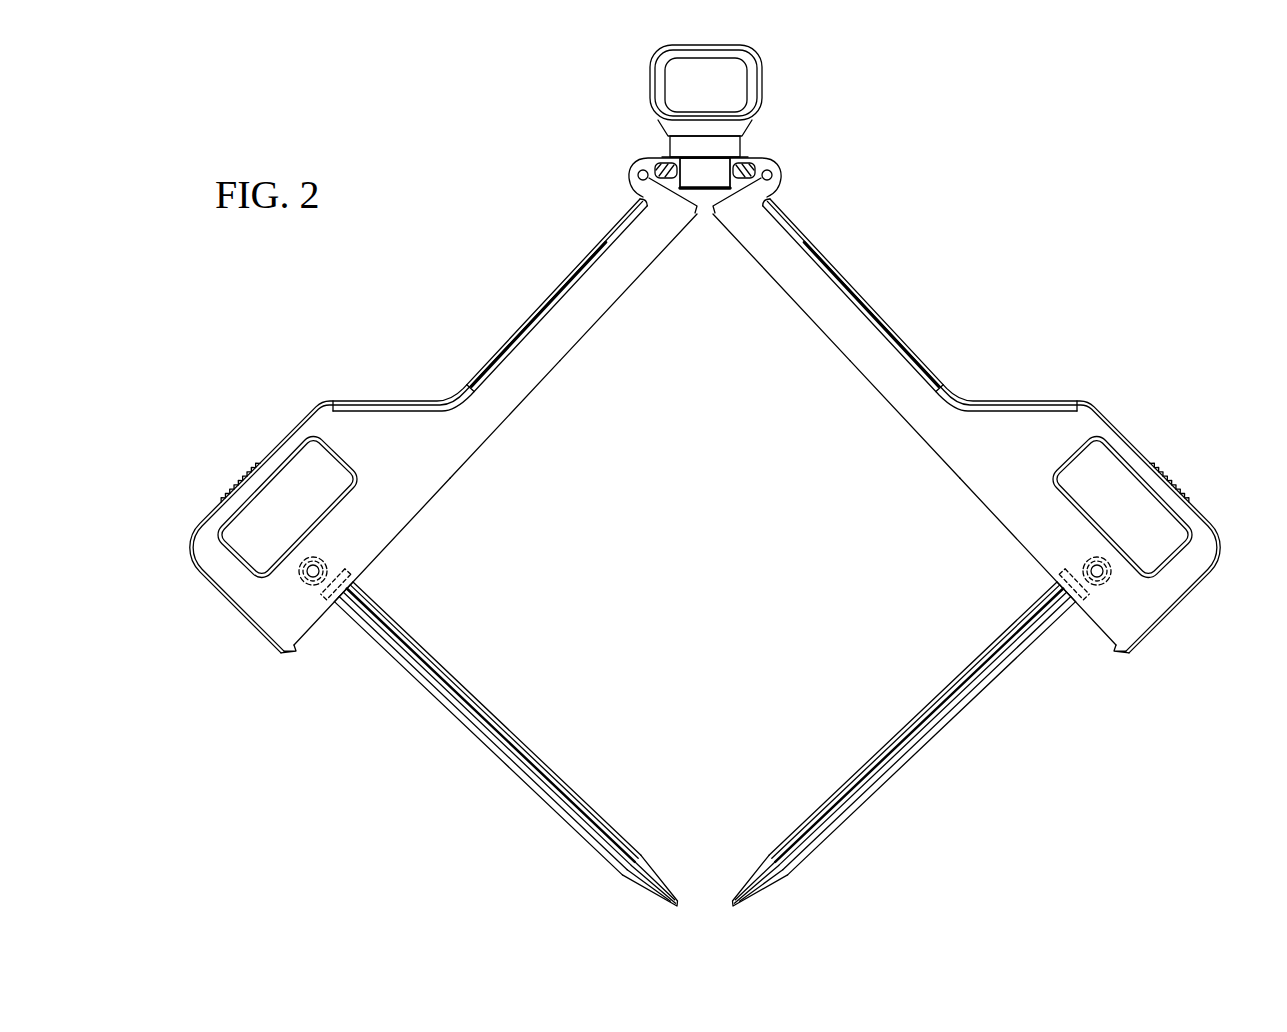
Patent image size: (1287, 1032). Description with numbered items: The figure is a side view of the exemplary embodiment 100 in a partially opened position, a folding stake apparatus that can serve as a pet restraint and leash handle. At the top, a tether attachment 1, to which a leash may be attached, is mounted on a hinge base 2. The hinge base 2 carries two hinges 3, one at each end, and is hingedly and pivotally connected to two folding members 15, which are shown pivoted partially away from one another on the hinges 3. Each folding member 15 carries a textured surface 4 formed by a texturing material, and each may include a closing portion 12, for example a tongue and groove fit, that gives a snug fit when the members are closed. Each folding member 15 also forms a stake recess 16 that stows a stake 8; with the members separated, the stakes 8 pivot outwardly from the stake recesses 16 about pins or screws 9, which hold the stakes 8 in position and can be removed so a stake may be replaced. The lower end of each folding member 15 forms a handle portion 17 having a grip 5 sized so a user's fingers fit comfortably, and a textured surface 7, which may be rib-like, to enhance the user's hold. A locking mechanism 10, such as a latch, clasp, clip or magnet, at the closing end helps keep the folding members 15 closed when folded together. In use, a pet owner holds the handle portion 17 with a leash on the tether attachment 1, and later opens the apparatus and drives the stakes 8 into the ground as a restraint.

The exemplary embodiment 100 is at (994, 267).
The tether attachment 1 is at (763, 92).
The hinge base 2 is at (656, 157).
The hinges 3 is at (632, 174).
The textured surface 4 is at (535, 333).
The folding members 15 is at (548, 267).
The stake recesses 16 is at (592, 313).
The closing portion 12 is at (487, 444).
The handle portion 17 is at (423, 500).
The grip 5 is at (312, 462).
The textured surface 7 is at (257, 462).
The pin or screw 9 is at (318, 566).
The locking mechanism 10 is at (284, 654).
The stakes 8 is at (467, 697).